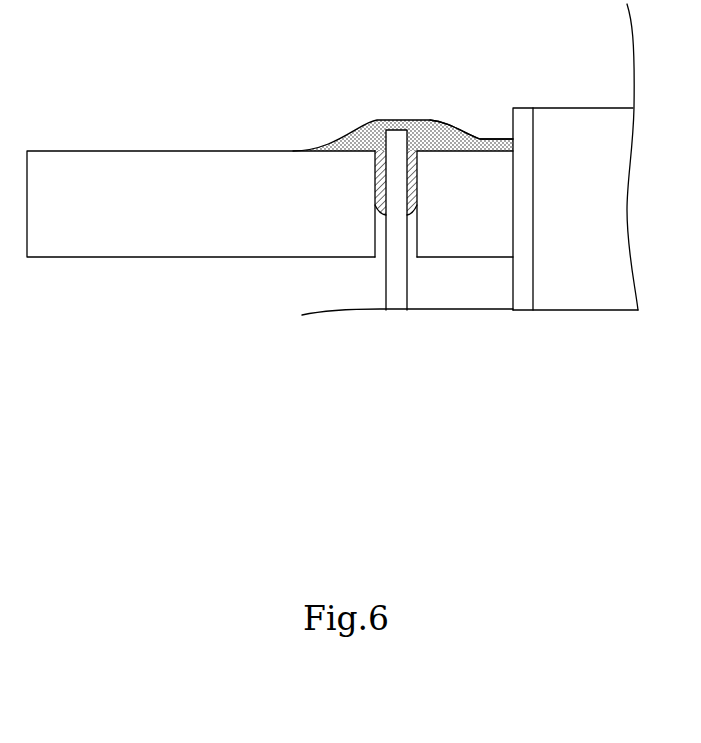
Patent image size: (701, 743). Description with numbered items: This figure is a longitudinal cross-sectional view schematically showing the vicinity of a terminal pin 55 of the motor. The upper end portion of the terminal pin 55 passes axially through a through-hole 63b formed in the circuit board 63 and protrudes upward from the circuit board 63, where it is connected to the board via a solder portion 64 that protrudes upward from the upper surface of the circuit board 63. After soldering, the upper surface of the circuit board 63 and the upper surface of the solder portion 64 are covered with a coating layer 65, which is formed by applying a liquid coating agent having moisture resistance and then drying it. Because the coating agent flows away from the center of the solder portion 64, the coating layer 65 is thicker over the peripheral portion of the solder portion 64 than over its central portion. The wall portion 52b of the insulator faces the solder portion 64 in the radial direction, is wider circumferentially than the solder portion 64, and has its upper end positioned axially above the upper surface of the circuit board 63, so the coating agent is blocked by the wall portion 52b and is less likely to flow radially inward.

The wall portion 52b is at (528, 212).
The terminal pin 55 is at (397, 277).
The circuit board 63 is at (184, 215).
The through-hole 63b is at (375, 205).
The solder portion 64 is at (377, 120).
The coating layer 65 is at (448, 138).